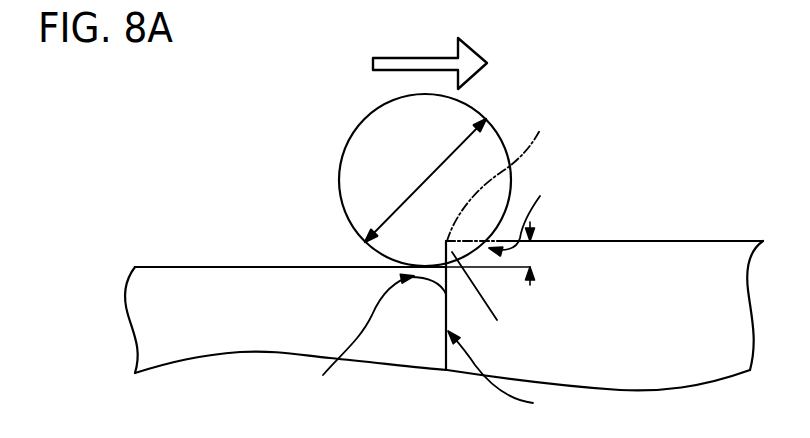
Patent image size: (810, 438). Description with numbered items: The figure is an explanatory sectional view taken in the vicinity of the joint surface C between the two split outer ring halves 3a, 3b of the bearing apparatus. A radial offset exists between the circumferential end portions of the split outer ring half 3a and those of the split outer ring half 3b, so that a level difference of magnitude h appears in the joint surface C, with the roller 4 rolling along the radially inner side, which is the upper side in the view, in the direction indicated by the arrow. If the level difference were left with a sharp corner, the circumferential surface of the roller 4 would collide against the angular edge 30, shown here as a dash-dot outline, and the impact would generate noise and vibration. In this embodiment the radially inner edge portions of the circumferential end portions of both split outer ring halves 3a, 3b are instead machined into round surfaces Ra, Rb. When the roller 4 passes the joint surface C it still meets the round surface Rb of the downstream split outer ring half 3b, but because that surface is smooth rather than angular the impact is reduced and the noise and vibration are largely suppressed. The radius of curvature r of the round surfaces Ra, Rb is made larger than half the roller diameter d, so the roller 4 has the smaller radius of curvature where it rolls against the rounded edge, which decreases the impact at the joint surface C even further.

The roller 4 is at (368, 150).
The angular edge 30 is at (504, 171).
The split outer ring half 3a is at (176, 292).
The split outer ring half 3b is at (688, 256).
The roller diameter d is at (425, 180).
The level difference h is at (536, 254).
The round surface Rb is at (532, 212).
The radius of curvature r is at (480, 291).
The round surface Ra is at (355, 339).
The joint surface C is at (501, 377).